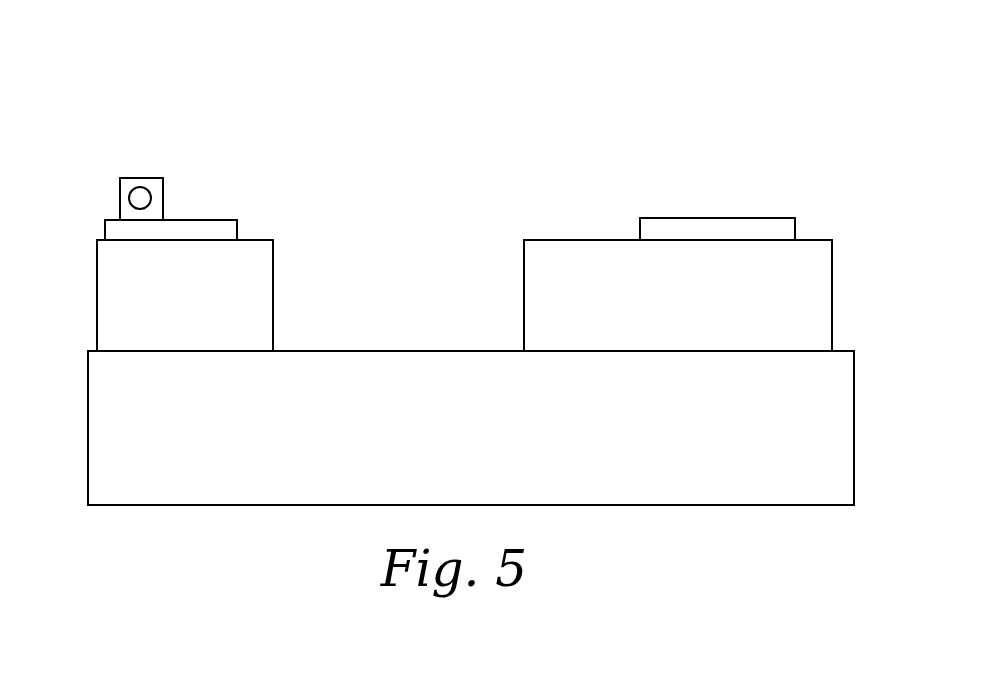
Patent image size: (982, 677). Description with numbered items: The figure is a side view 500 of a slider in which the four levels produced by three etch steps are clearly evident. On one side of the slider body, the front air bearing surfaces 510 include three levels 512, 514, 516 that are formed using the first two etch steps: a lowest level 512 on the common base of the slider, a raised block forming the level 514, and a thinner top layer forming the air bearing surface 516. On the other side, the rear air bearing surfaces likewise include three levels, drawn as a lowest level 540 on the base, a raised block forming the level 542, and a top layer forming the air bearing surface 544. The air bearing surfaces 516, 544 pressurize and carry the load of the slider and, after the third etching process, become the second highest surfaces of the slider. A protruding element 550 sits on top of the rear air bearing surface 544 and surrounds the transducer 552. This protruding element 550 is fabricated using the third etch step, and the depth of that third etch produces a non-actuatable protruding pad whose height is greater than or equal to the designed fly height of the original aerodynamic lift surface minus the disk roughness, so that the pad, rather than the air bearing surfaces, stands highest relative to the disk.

The side view of the slider 500 is at (533, 106).
The front air bearing surfaces 510 is at (759, 184).
The first level of front air bearing surfaces 512 is at (845, 349).
The second level of front air bearing surfaces 514 is at (820, 239).
The air bearing surface 516 is at (673, 217).
The first level of rear air bearing surfaces 540 is at (92, 350).
The second level of rear air bearing surfaces 542 is at (102, 239).
The air bearing surface 544 is at (112, 219).
The protruding element 550 is at (128, 177).
The transducer 552 is at (144, 189).